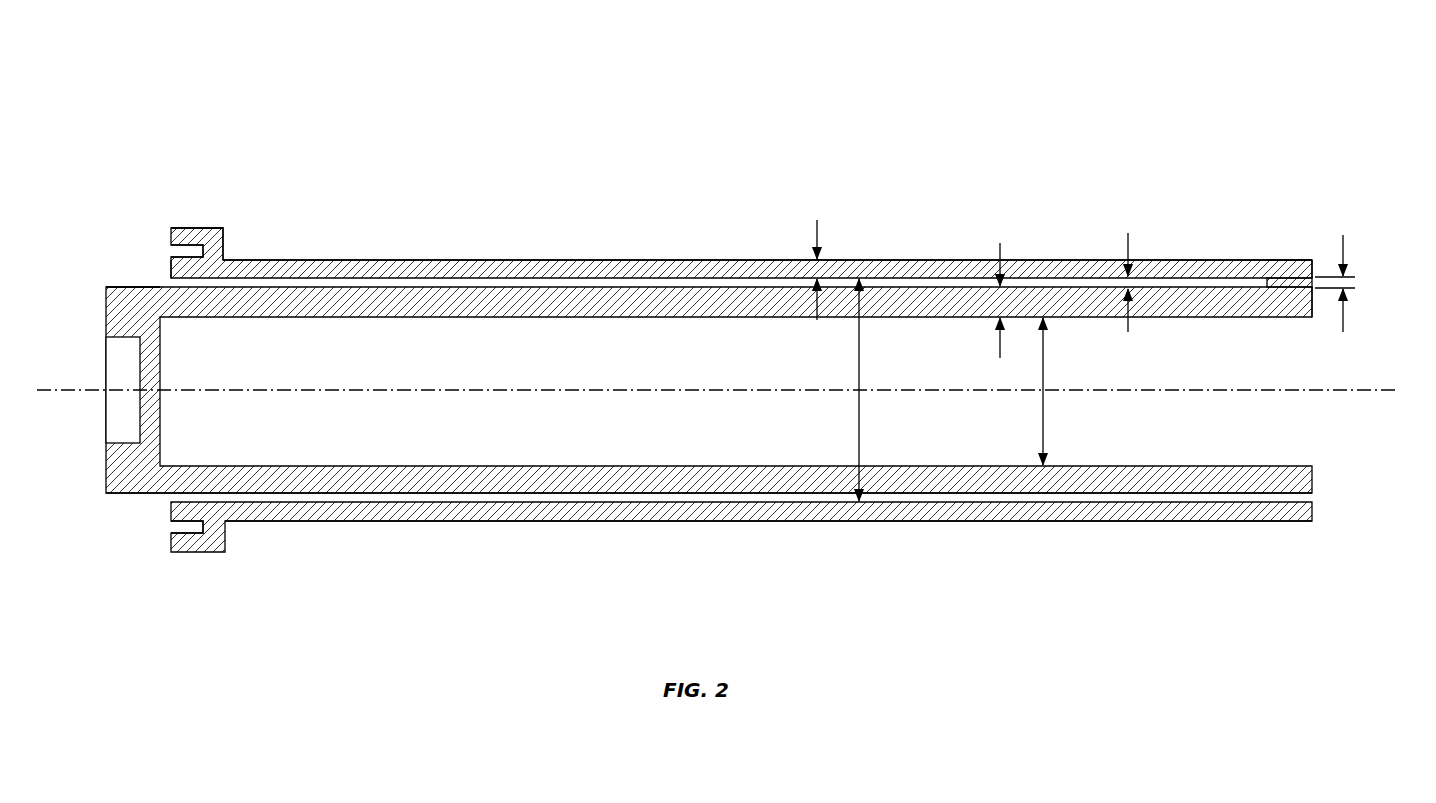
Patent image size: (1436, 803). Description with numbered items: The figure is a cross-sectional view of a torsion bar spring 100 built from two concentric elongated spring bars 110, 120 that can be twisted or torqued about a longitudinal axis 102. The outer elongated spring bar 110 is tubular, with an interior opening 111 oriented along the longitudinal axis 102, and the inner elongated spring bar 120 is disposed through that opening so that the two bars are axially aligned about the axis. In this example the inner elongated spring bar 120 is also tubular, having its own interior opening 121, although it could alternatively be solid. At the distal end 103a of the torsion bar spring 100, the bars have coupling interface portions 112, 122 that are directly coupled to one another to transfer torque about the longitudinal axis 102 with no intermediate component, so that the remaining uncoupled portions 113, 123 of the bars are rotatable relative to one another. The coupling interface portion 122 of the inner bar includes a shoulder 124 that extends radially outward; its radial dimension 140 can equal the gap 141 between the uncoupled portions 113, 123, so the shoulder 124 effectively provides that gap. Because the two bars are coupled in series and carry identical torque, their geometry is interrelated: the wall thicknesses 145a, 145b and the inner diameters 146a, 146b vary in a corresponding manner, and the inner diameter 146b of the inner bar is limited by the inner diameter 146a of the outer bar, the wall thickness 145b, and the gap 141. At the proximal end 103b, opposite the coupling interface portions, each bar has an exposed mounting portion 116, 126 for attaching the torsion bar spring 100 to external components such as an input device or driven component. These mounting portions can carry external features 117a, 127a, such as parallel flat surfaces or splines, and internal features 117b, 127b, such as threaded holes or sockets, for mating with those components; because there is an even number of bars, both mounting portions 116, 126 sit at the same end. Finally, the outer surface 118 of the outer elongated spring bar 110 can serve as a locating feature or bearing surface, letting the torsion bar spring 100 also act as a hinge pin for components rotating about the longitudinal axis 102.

The torsion bar spring 100 is at (484, 107).
The longitudinal axis 102 is at (781, 388).
The distal end 103a is at (1308, 205).
The proximal end 103b is at (116, 180).
The elongated spring bar 110 is at (703, 251).
The interior opening 111 is at (167, 278).
The coupling interface portion 112 is at (1309, 255).
The uncoupled portion 113 is at (473, 536).
The mounting portion 116 is at (194, 219).
The external feature 117a is at (212, 228).
The internal feature 117b is at (161, 534).
The outer surface 118 is at (673, 260).
The elongated spring bar 120 is at (715, 323).
The interior opening 121 is at (440, 345).
The coupling interface portion 122 is at (1321, 303).
The uncoupled portion 123 is at (600, 501).
The shoulder 124 is at (1290, 280).
The mounting portion 126 is at (104, 284).
The external feature 127a is at (121, 287).
The internal feature 127b is at (95, 370).
The radial dimension 140 is at (1345, 245).
The gap 141 is at (1128, 243).
The wall thickness 145a is at (817, 233).
The wall thickness 145b is at (1000, 250).
The inner diameter 146a is at (859, 358).
The inner diameter 146b is at (1043, 360).